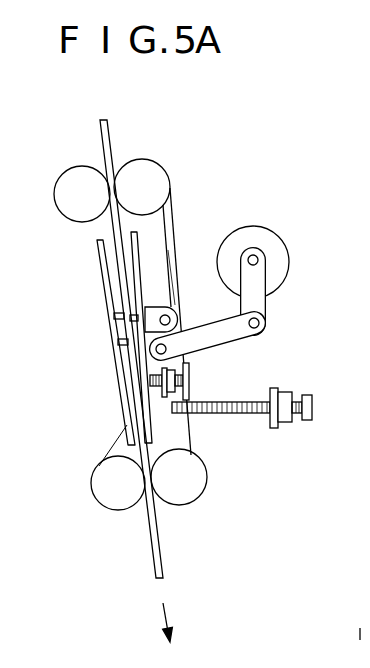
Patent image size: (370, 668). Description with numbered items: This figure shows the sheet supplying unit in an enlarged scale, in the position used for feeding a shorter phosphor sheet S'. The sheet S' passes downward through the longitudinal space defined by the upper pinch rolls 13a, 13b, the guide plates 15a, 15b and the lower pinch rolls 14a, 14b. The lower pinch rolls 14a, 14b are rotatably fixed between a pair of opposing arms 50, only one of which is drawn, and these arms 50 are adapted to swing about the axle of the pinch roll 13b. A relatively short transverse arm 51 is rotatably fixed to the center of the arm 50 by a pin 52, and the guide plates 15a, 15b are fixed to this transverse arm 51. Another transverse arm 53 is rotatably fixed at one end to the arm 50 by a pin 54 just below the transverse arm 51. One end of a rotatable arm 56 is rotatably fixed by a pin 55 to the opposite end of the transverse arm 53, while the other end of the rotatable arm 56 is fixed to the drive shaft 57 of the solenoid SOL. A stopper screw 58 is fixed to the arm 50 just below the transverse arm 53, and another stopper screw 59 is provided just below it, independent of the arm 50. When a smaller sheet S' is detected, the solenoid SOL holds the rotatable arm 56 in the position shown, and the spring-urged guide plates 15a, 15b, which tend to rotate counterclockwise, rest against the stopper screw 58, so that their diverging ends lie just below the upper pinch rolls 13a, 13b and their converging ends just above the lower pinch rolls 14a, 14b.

The upper pinch roll 13a is at (80, 167).
The upper pinch roll 13b is at (167, 173).
The lower pinch roll 14a is at (110, 513).
The lower pinch roll 14b is at (207, 485).
The guide plate 15a is at (105, 307).
The guide plate 15b is at (135, 290).
The arm 50 is at (168, 228).
The transverse arm 51 is at (176, 288).
The pin 52 is at (173, 314).
The transverse arm 53 is at (235, 342).
The pin 54 is at (156, 349).
The pin 55 is at (263, 333).
The rotatable arm 56 is at (262, 297).
The drive shaft 57 is at (258, 260).
The stopper screw 58 is at (190, 380).
The stopper screw 59 is at (312, 400).
The solenoid SOL is at (308, 208).
The phosphor sheet S' is at (136, 381).